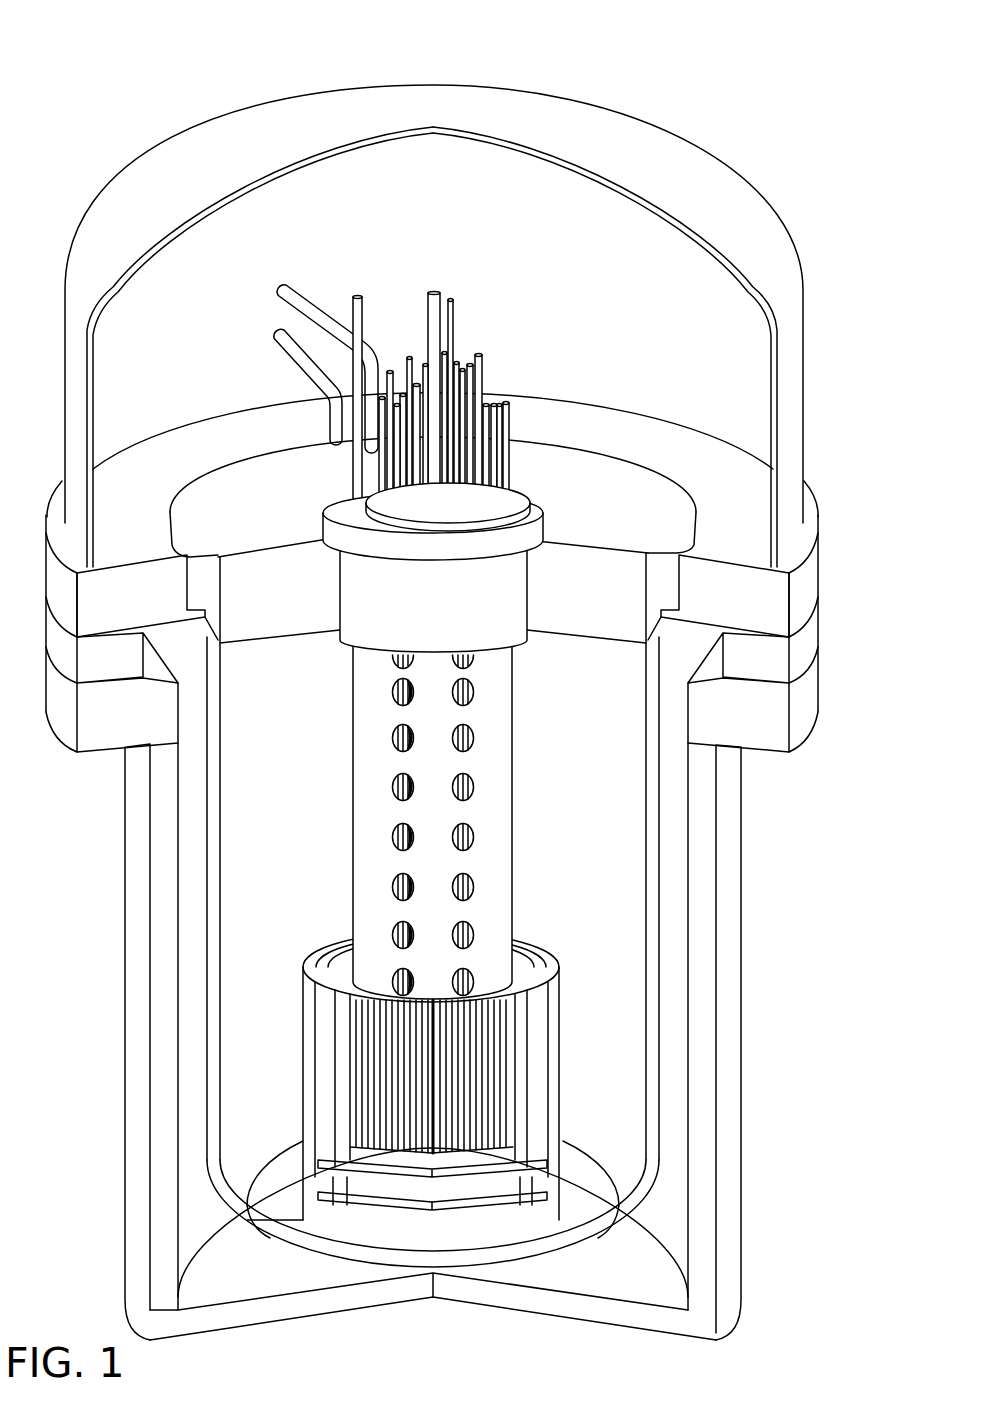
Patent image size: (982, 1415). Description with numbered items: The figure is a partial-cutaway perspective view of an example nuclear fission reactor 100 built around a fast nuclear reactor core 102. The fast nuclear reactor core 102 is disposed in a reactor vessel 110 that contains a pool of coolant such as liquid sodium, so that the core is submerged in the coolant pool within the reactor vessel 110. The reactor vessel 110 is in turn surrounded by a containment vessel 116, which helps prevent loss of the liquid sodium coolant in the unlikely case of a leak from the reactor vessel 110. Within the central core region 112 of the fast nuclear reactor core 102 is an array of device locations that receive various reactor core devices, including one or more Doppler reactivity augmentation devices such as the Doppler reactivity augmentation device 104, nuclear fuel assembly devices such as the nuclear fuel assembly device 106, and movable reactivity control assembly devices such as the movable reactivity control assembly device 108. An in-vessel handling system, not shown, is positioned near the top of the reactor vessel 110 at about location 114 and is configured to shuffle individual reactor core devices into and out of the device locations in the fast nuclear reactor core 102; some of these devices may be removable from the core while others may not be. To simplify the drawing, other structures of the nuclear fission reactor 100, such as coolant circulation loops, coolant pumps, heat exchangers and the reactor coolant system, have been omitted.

The nuclear fission reactor 100 is at (143, 90).
The fast nuclear reactor core 102 is at (554, 1129).
The Doppler reactivity augmentation device 104 is at (433, 1138).
The nuclear fuel assembly device 106 is at (395, 1133).
The movable reactivity control assembly device 108 is at (480, 1130).
The reactor vessel 110 is at (653, 992).
The central core region 112 is at (447, 1073).
The location 114 is at (552, 377).
The containment vessel 116 is at (697, 828).